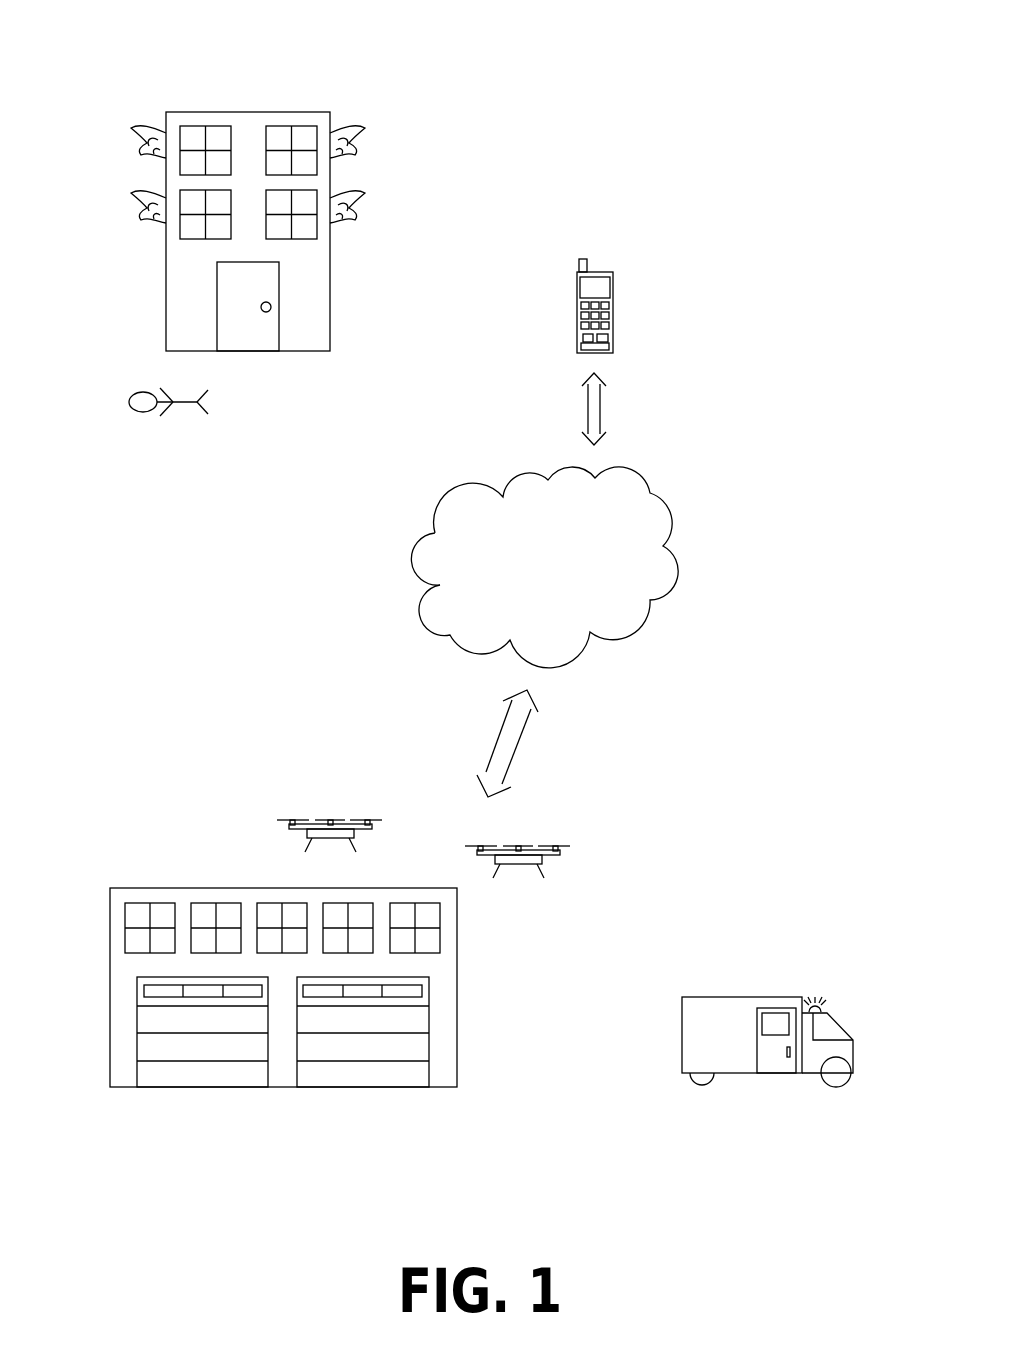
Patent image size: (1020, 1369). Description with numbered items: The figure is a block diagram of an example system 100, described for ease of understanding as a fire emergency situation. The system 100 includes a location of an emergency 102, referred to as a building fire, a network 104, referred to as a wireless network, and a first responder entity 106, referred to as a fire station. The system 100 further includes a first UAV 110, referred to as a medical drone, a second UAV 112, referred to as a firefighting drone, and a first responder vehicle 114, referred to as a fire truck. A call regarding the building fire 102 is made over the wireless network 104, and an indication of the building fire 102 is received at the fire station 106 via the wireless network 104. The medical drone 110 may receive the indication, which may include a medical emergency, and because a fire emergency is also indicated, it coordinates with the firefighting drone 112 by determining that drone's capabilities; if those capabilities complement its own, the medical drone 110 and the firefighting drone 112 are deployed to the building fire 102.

The system 100 is at (893, 72).
The location of an emergency 102 is at (106, 95).
The network 104 is at (700, 479).
The first responder entity 106 is at (647, 262).
The first UAV 110 is at (248, 812).
The second UAV 112 is at (598, 837).
The first responder vehicle 114 is at (861, 989).